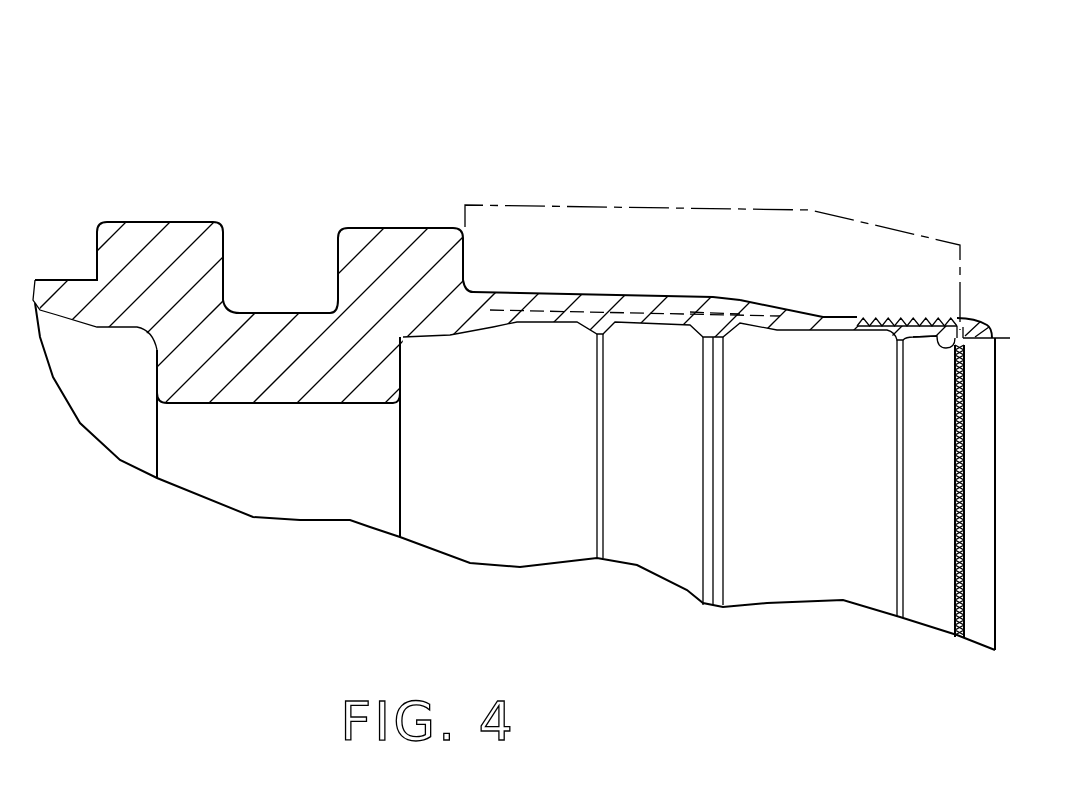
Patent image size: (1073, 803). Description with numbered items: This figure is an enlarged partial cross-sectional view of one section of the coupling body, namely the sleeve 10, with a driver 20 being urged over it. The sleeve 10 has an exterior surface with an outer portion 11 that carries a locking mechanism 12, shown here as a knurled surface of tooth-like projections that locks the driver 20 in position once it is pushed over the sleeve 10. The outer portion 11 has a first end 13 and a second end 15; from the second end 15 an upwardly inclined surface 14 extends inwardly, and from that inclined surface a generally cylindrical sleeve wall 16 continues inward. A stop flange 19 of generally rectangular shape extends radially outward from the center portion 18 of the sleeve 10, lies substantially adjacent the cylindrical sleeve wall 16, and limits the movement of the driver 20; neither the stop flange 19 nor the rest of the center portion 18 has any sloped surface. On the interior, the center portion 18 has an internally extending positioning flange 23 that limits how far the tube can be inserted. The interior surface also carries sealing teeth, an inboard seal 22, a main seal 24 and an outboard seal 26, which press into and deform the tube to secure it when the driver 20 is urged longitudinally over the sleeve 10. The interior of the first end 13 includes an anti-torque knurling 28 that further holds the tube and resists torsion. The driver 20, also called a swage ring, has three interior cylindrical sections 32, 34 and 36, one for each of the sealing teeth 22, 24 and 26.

The sleeve 10 is at (286, 195).
The outer portion 11 is at (918, 340).
The locking mechanism 12 is at (892, 318).
The first end 13 is at (1010, 338).
The upwardly inclined surface 14 is at (770, 307).
The second end 15 is at (840, 317).
The generally cylindrical sleeve wall 16 is at (597, 292).
The center portion 18 is at (285, 377).
The stop flange 19 is at (140, 222).
The driver 20 is at (683, 205).
The inboard seal 22 is at (593, 334).
The positioning flange 23 is at (225, 403).
The main seal 24 is at (693, 337).
The outboard seal 26 is at (893, 340).
The anti-torque knurling 28 is at (966, 515).
The cylindrical section 32 is at (544, 302).
The cylindrical section 34 is at (705, 302).
The cylindrical section 36 is at (972, 325).